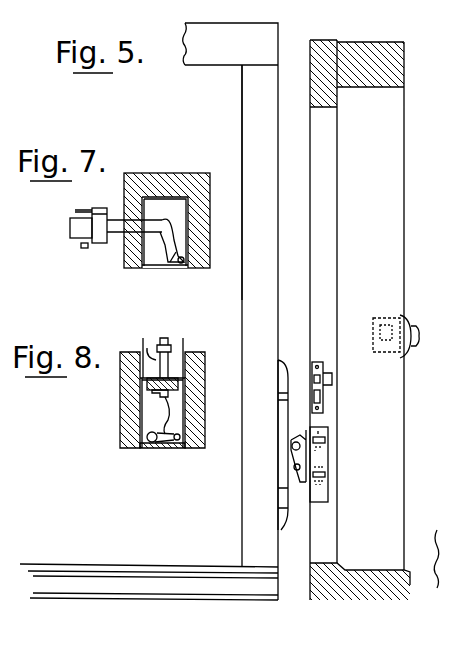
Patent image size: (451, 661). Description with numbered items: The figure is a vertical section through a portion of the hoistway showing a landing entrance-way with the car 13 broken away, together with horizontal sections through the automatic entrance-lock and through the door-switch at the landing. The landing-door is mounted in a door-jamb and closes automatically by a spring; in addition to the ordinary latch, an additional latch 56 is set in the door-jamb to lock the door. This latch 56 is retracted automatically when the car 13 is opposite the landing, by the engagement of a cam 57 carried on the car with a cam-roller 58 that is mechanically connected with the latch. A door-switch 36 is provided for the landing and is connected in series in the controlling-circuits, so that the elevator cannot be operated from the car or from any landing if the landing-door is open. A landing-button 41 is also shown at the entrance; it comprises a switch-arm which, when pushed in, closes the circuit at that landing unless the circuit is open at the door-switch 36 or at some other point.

In FIG. 5, the car 13 is at (242, 112).
In FIG. 5, the landing-button 41 is at (415, 330).
In FIG. 5, the additional latch 56 is at (326, 440).
In FIG. 7, the additional latch 56 is at (170, 268).
In FIG. 5, the door-switch 36 is at (326, 475).
In FIG. 8, the door-switch 36 is at (178, 450).
In FIG. 5, the cam 57 is at (286, 528).
In FIG. 5, the cam-roller 58 is at (292, 444).
In FIG. 7, the cam-roller 58 is at (75, 233).